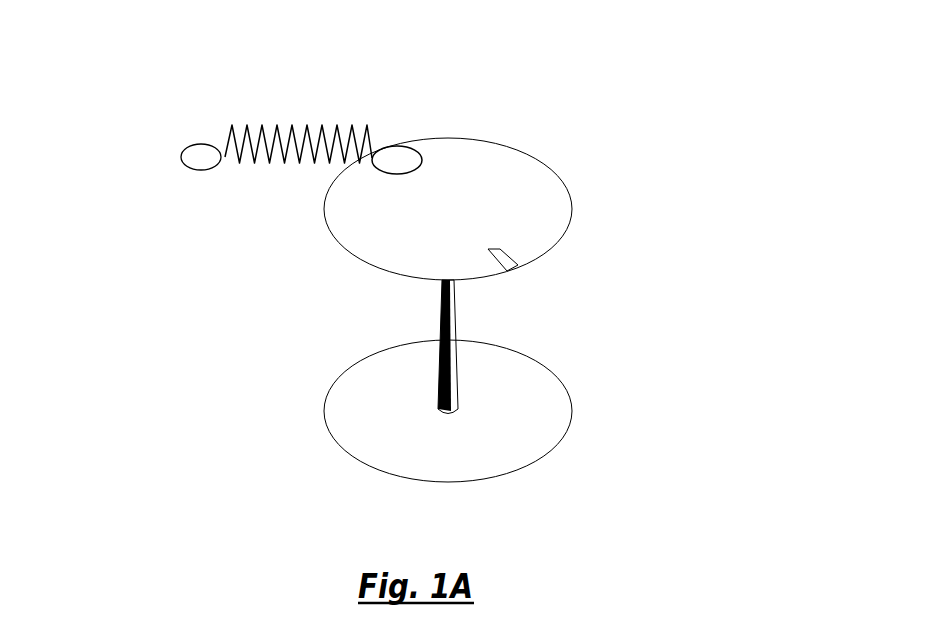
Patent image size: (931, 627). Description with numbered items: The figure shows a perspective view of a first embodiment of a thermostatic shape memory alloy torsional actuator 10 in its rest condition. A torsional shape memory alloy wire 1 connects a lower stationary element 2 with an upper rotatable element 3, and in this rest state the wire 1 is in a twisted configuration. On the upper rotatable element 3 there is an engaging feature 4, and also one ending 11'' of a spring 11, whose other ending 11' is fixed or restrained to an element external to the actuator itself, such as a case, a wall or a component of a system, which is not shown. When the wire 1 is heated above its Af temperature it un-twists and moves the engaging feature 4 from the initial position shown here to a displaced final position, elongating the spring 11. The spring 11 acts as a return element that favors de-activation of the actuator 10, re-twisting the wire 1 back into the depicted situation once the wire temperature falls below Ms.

The thermostatic shape memory alloy torsional actuator 10 is at (630, 238).
The upper rotatable element 3 is at (520, 168).
The lower stationary element 2 is at (513, 432).
The torsional shape memory alloy wire 1 is at (440, 335).
The engaging feature 4 is at (502, 256).
The spring 11 is at (257, 191).
The other ending of the spring 11' is at (146, 135).
The ending of the spring 11'' is at (381, 104).